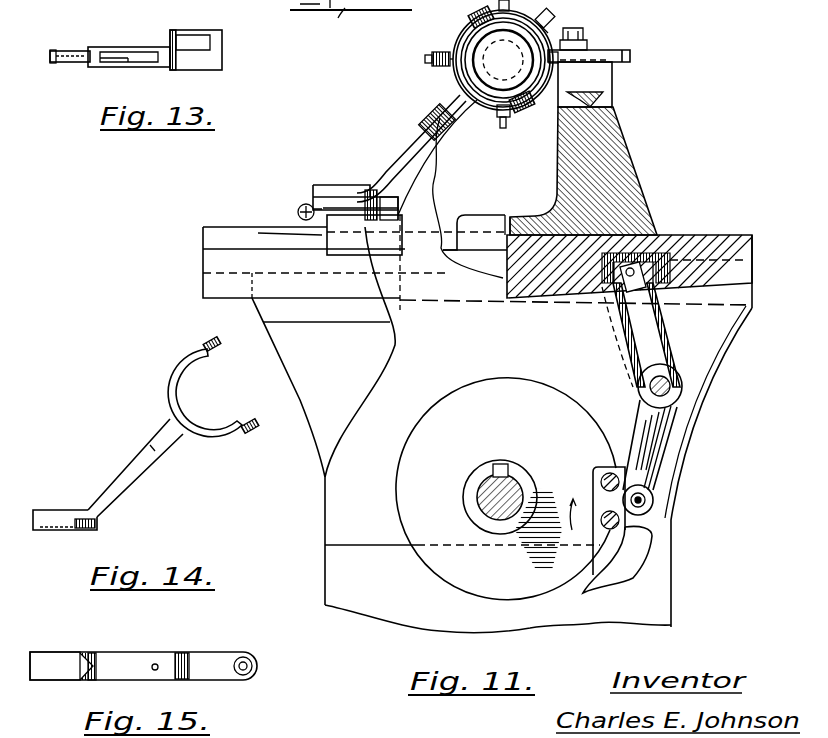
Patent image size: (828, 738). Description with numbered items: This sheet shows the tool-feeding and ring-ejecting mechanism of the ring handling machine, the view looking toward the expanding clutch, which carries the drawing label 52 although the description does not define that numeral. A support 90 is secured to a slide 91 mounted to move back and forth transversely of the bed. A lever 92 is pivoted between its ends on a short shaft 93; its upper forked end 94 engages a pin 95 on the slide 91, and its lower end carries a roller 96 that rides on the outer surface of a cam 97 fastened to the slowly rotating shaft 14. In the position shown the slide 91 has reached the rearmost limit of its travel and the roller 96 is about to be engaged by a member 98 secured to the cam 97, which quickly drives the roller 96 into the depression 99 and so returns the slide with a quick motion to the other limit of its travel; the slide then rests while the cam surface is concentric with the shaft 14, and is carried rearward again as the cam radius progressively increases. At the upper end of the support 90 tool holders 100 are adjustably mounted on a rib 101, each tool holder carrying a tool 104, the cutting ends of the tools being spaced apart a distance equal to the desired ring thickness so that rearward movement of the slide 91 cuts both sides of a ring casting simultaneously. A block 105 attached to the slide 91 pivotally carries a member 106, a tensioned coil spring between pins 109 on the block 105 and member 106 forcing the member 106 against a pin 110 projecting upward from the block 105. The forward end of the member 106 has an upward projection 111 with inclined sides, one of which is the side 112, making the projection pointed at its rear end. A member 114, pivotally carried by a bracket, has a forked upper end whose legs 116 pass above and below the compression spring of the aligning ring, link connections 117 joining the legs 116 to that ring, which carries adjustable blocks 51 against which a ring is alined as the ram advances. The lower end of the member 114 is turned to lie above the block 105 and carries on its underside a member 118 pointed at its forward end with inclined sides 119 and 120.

In FIG. 11, the shaft 14 is at (478, 494).
In FIG. 11, the adjustable block 51 is at (500, 128).
In FIG. 11, the ring clamp 52 is at (483, 110).
In FIG. 11, the support 90 is at (617, 195).
In FIG. 11, the slide 91 is at (228, 242).
In FIG. 11, the lever 92 is at (660, 347).
In FIG. 11, the short shaft 93 is at (668, 390).
In FIG. 11, the upper forked end 94 is at (670, 260).
In FIG. 11, the pin 95 is at (657, 240).
In FIG. 11, the roller 96 is at (650, 500).
In FIG. 11, the cam 97 is at (510, 398).
In FIG. 11, the member 98 is at (642, 567).
In FIG. 11, the depression 99 is at (575, 565).
In FIG. 11, the tool holder 100 is at (603, 78).
In FIG. 11, the rib 101 is at (608, 97).
In FIG. 11, the tool 104 is at (630, 50).
In FIG. 11, the block 105 is at (258, 233).
In FIG. 13, the member 106 is at (146, 60).
In FIG. 11, the member 106 is at (355, 227).
In FIG. 13, the pins 109 is at (72, 63).
In FIG. 11, the pin 110 is at (400, 310).
In FIG. 13, the upward projection 111 is at (215, 40).
In FIG. 13, the inclined side 112 is at (170, 33).
In FIG. 14, the member 114 is at (135, 475).
In FIG. 15, the member 114 is at (135, 662).
In FIG. 11, the member 114 is at (390, 163).
In FIG. 14, the legs 116 is at (213, 432).
In FIG. 15, the legs 116 is at (217, 672).
In FIG. 11, the legs 116 is at (453, 64).
In FIG. 11, the link connections 117 is at (468, 30).
In FIG. 14, the member 118 is at (58, 523).
In FIG. 15, the member 118 is at (55, 665).
In FIG. 11, the member 118 is at (318, 199).
In FIG. 15, the inclined side 119 is at (95, 655).
In FIG. 15, the inclined side 120 is at (90, 680).
In FIG. 11, the inclined side 120 is at (360, 200).